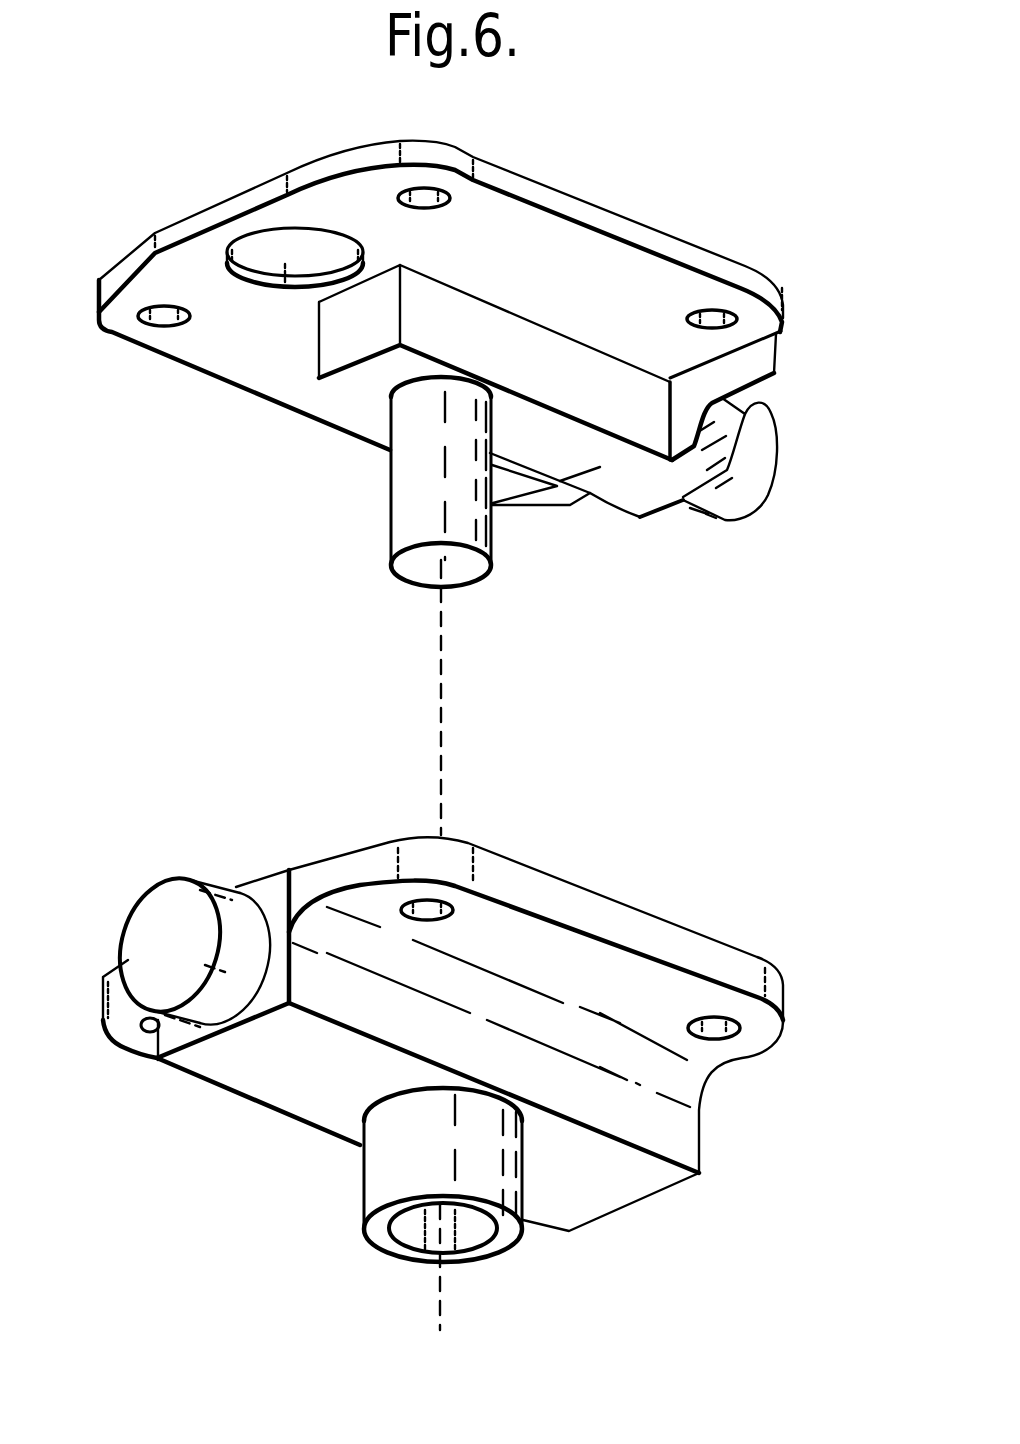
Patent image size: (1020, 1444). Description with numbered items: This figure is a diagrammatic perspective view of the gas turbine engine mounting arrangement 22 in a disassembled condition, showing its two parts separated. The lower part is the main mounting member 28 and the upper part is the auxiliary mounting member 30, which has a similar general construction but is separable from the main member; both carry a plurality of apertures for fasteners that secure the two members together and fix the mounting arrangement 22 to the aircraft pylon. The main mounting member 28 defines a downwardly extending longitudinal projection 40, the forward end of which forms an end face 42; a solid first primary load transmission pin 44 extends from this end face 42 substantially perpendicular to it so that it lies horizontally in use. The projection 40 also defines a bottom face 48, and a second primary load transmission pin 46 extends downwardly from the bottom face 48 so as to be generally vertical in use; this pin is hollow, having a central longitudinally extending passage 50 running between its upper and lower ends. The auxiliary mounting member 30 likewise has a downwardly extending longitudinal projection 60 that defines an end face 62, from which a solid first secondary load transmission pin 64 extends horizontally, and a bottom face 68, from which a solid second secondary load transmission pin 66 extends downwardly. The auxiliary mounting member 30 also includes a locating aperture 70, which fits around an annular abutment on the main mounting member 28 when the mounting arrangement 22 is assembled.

The mounting arrangement 22 is at (617, 152).
The main mounting member 28 is at (650, 1178).
The auxiliary mounting member 30 is at (212, 207).
The longitudinal projection 40 is at (270, 1083).
The end face 42 is at (172, 1038).
The first primary load transmission pin 44 is at (135, 938).
The second primary load transmission pin 46 is at (488, 1190).
The bottom face 48 is at (320, 1108).
The central longitudinally extending passage 50 is at (420, 1240).
The projection 60 is at (601, 478).
The end face 62 is at (669, 507).
The first secondary load transmission pin 64 is at (767, 423).
The second secondary load transmission pin 66 is at (406, 516).
The bottom face 68 is at (367, 382).
The locating aperture 70 is at (301, 240).